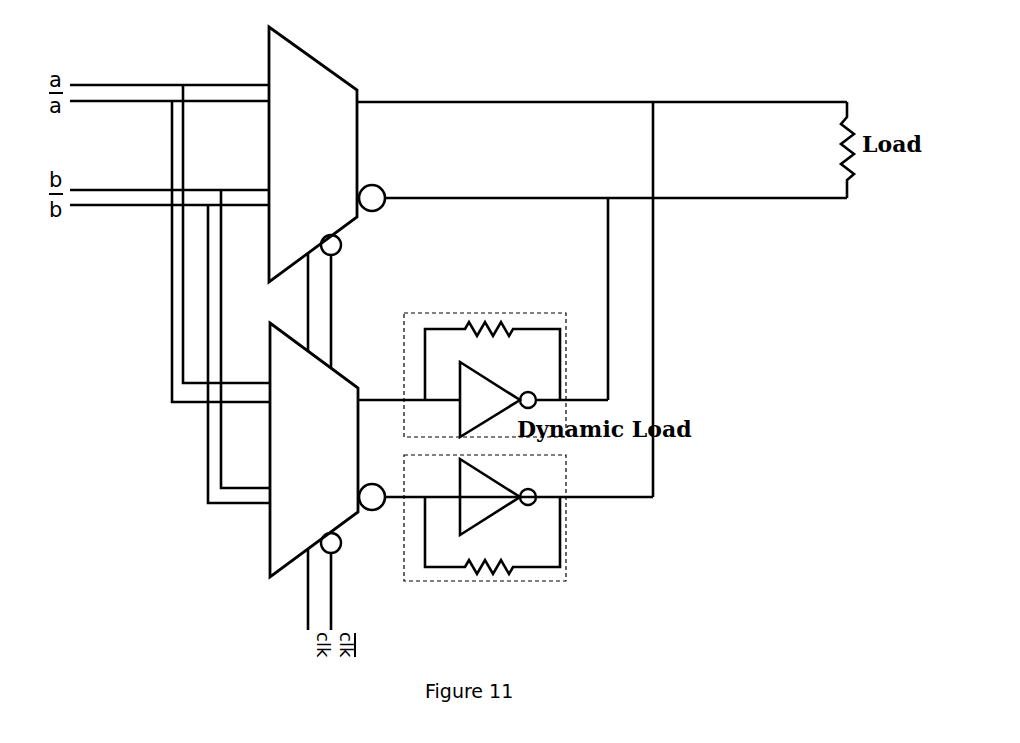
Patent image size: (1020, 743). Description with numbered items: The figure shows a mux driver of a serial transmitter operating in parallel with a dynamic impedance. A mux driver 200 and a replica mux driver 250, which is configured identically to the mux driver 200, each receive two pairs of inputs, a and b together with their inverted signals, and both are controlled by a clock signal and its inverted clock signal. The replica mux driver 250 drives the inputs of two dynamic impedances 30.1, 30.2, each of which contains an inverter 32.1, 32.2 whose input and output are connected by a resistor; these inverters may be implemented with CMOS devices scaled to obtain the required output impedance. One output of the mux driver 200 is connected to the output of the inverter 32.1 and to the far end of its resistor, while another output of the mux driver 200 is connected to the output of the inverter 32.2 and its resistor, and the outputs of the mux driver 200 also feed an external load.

The mux driver 200 is at (327, 154).
The replica mux driver 250 is at (327, 450).
The dynamic impedance 30.1 is at (492, 361).
The dynamic impedance 30.2 is at (492, 535).
The inverter 32.1 is at (498, 399).
The inverter 32.2 is at (498, 497).